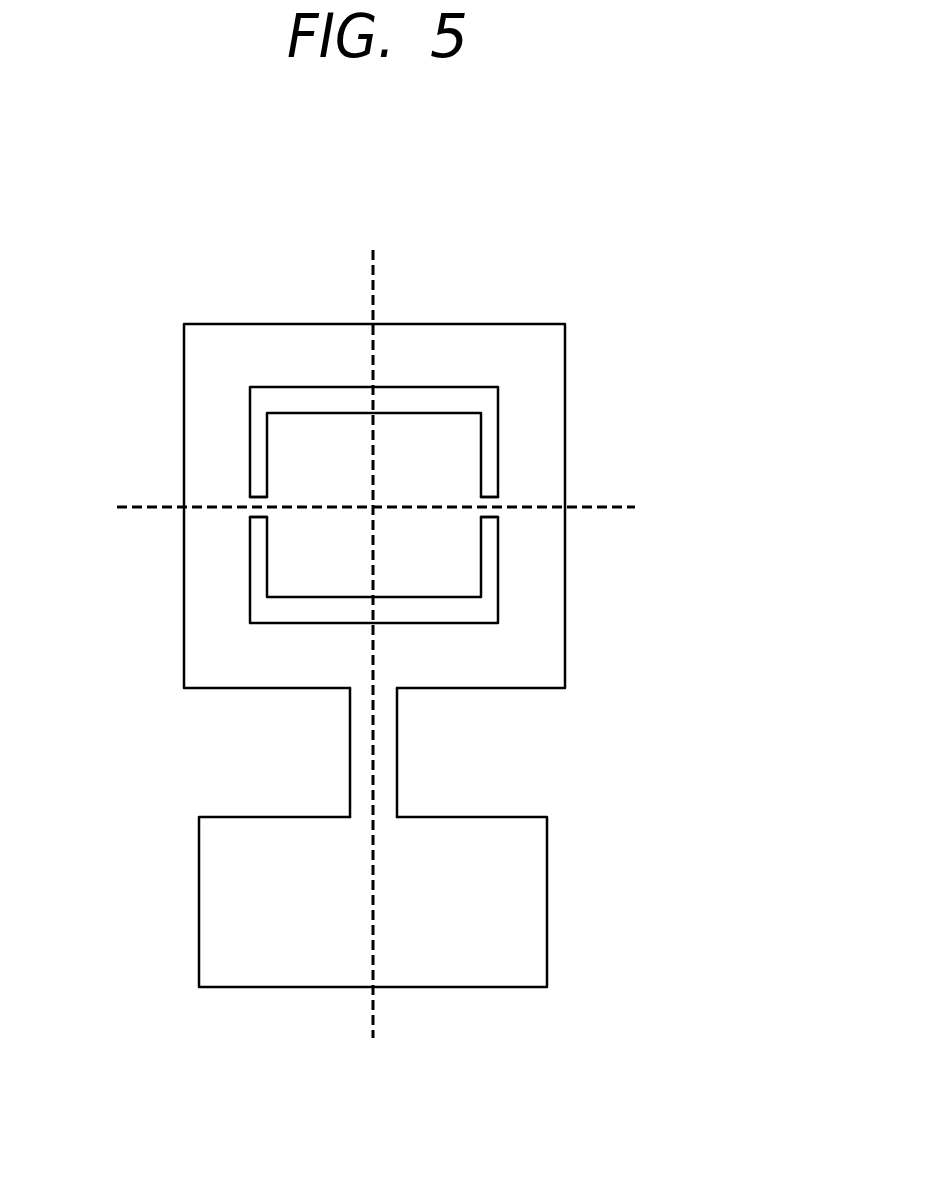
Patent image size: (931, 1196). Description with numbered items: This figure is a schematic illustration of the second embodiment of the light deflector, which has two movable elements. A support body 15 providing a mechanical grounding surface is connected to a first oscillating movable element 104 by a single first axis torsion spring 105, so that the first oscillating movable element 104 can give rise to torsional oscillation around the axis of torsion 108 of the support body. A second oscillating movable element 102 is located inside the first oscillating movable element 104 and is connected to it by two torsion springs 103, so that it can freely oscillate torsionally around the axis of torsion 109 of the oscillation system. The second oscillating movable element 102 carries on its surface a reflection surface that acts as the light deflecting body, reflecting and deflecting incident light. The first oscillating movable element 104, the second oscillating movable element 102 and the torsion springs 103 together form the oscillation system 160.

The support body 15 is at (253, 905).
The second oscillating movable element 102 is at (420, 443).
The torsion springs 103 is at (258, 490).
The first oscillating movable element 104 is at (533, 578).
The first axis torsion spring 105 is at (397, 742).
The axis of torsion of the support body 108 is at (402, 632).
The axis of torsion of the oscillation system 109 is at (354, 488).
The oscillation system 160 is at (583, 170).